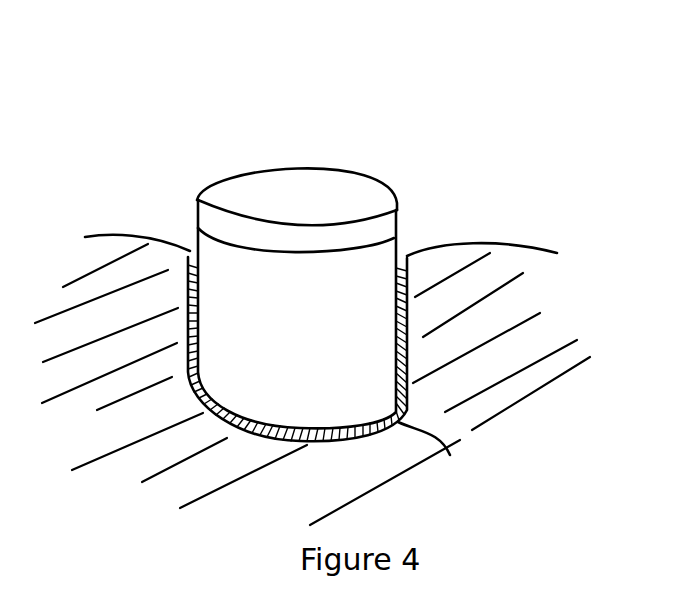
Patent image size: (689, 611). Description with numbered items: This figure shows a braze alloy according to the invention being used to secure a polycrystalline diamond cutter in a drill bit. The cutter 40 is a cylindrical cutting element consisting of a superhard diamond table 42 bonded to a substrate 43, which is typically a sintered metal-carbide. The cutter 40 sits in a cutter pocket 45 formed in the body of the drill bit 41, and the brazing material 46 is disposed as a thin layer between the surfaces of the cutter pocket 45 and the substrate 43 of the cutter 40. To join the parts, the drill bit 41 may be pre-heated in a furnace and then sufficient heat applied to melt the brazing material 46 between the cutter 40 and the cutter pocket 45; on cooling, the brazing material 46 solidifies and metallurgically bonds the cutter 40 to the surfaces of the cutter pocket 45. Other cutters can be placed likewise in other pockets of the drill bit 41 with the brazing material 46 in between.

The cutter 40 is at (259, 252).
The drill bit 41 is at (497, 221).
The diamond table 42 is at (352, 200).
The substrate 43 is at (312, 338).
The cutter pocket 45 is at (187, 319).
The brazing material 46 is at (193, 255).